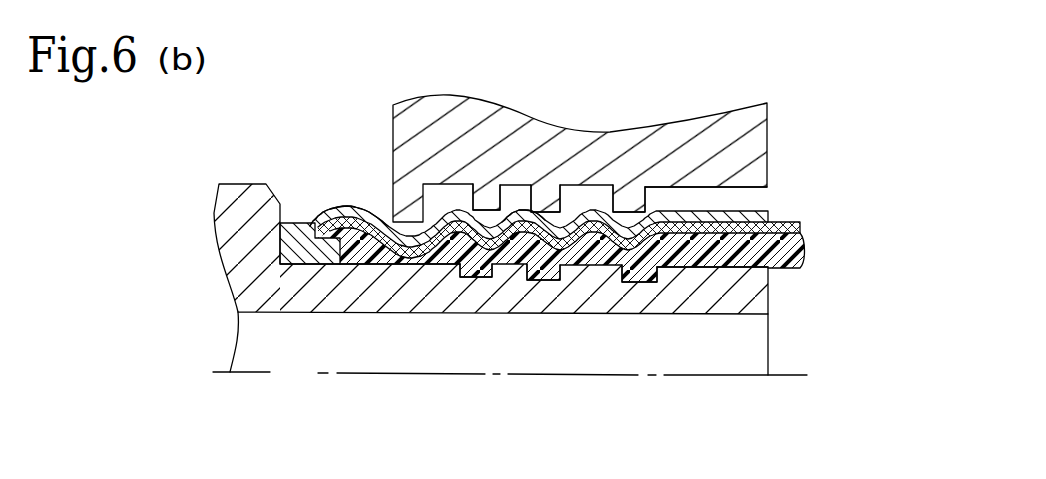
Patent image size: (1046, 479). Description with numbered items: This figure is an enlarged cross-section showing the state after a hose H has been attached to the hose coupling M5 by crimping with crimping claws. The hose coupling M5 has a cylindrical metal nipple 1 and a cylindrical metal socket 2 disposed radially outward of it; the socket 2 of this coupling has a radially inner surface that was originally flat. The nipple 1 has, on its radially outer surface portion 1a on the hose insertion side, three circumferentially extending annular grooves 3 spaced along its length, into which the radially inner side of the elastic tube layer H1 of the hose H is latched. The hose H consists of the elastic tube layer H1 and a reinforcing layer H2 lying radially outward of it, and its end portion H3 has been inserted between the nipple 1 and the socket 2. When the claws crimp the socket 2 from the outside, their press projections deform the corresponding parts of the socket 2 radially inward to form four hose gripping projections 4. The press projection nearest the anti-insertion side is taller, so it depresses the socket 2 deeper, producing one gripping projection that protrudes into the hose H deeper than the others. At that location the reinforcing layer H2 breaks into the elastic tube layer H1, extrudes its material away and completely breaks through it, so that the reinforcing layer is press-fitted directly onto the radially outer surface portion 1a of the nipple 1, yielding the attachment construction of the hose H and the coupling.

The nipple 1 is at (250, 172).
The radially outer surface portion 1a is at (493, 266).
The socket 2 is at (766, 204).
The annular grooves 3 is at (687, 264).
The hose gripping projections 4 is at (297, 231).
The hose H is at (814, 226).
The elastic tube layer H1 is at (803, 259).
The reinforcing layer H2 is at (798, 264).
The end portion of the hose H3 is at (520, 207).
The hose coupling M5 is at (346, 187).